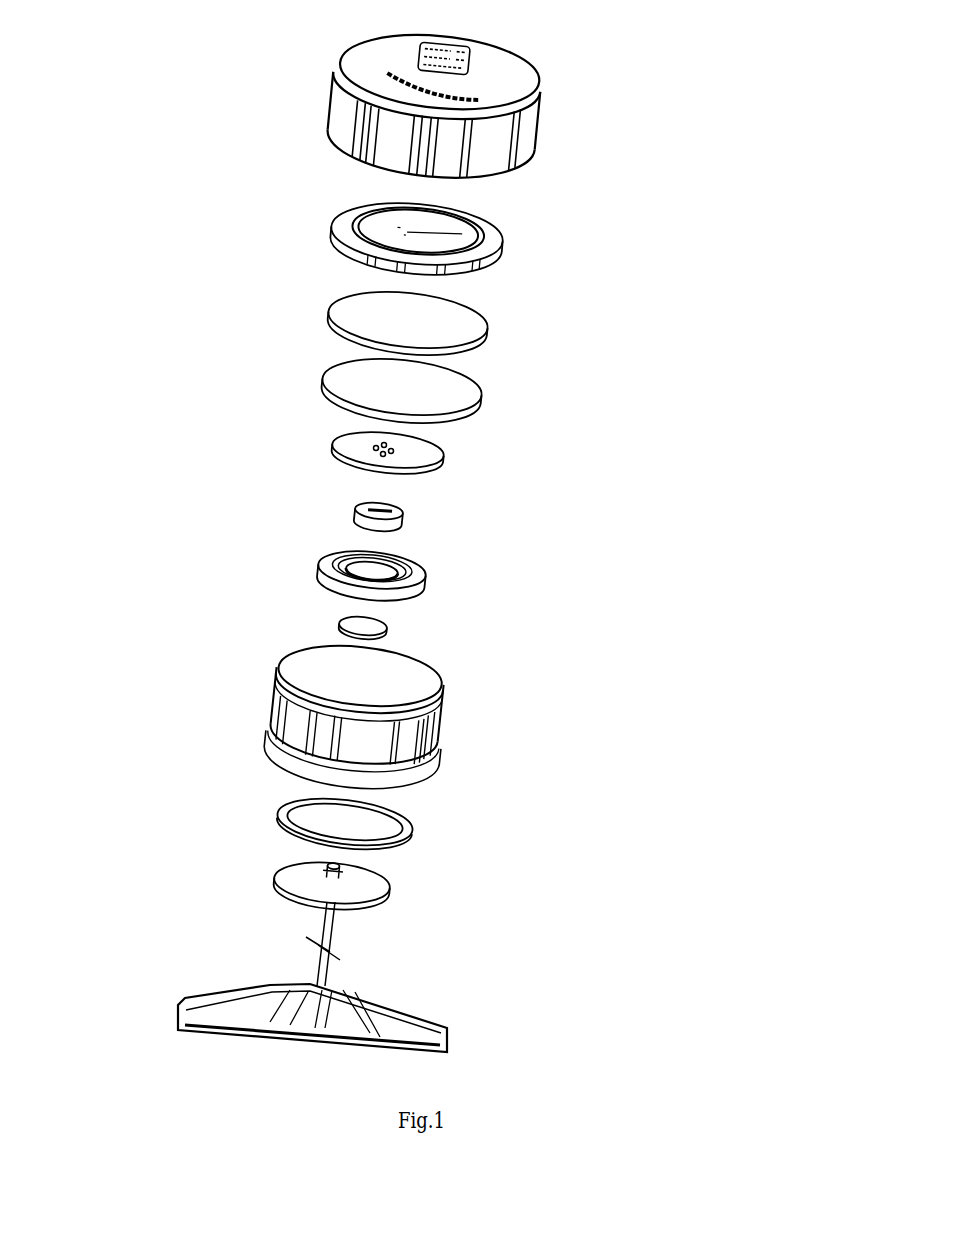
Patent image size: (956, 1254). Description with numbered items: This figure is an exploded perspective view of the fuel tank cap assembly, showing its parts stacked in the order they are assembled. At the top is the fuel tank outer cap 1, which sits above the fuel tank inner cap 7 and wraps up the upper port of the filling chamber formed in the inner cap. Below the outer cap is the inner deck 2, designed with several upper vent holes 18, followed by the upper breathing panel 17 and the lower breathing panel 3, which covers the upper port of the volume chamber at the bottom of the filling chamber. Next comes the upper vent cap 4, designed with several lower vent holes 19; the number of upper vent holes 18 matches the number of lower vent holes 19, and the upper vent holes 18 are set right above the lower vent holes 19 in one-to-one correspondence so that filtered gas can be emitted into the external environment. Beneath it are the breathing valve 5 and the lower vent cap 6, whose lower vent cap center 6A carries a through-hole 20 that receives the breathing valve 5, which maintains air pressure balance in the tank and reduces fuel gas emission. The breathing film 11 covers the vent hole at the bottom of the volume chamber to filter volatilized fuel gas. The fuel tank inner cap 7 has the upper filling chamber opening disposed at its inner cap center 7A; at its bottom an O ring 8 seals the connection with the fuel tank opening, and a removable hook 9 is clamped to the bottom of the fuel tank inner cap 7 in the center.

The fuel tank outer cap 1 is at (537, 130).
The inner deck 2 is at (507, 242).
The upper vent hole 18 is at (502, 222).
The upper breathing panel 17 is at (487, 332).
The lower breathing panel 3 is at (482, 397).
The lower vent hole 19 is at (405, 447).
The upper vent cap 4 is at (442, 457).
The breathing valve 5 is at (403, 523).
The through-hole 20 is at (398, 571).
The lower vent cap 6 is at (425, 588).
The lower vent cap center 6A is at (372, 568).
The breathing film 11 is at (388, 627).
The fuel tank inner cap 7 is at (430, 768).
The inner cap center 7A is at (362, 680).
The O ring 8 is at (412, 834).
The hook 9 is at (357, 987).